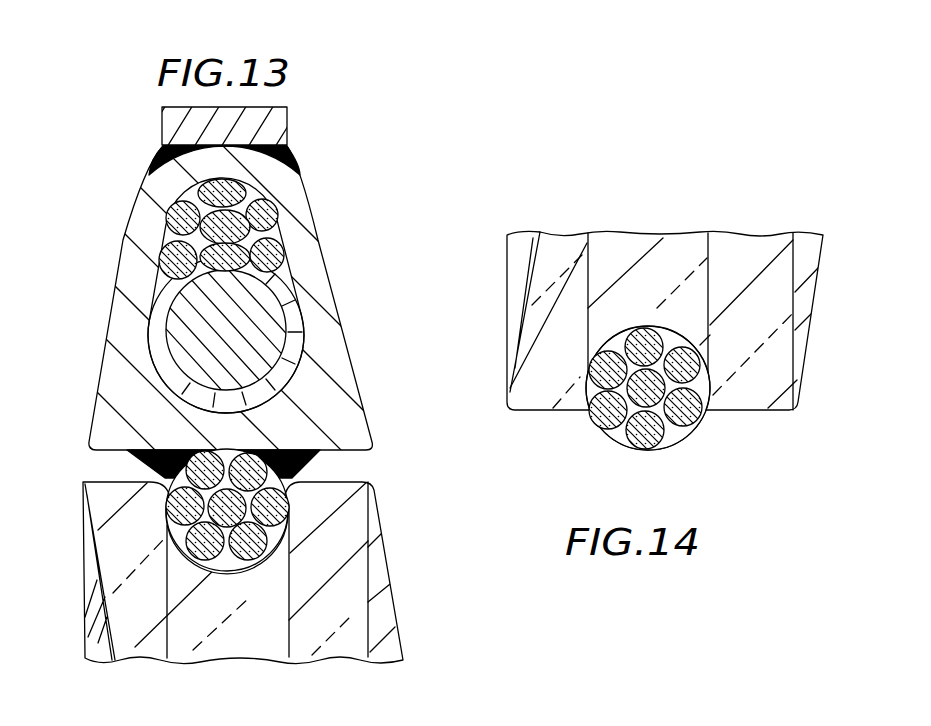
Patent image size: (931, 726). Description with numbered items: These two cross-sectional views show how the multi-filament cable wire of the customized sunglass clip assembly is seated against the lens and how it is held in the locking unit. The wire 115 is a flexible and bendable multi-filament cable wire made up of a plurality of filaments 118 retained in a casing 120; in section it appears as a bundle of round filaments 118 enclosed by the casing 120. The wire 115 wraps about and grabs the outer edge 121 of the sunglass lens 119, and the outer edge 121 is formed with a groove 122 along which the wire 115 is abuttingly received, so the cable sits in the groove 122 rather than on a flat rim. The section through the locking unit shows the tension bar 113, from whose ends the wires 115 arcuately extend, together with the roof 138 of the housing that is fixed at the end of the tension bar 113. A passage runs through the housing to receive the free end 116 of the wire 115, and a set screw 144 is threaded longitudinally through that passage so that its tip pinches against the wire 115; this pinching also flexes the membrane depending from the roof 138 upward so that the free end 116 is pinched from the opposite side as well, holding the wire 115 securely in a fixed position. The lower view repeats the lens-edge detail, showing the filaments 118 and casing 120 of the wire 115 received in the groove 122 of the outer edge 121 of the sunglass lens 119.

In FIG. 13, the tension bar 113 is at (183, 118).
In FIG. 13, the roof 138 is at (240, 168).
In FIG. 13, the free end 116 is at (167, 223).
In FIG. 13, the set screw 144 is at (200, 318).
In FIG. 13, the outer edge 121 is at (103, 479).
In FIG. 14, the outer edge 121 is at (548, 413).
In FIG. 13, the groove 122 is at (290, 514).
In FIG. 13, the sunglass lens 119 is at (350, 605).
In FIG. 14, the sunglass lens 119 is at (767, 345).
In FIG. 13, the wire 115 is at (228, 573).
In FIG. 14, the wire 115 is at (682, 441).
In FIG. 13, the filaments 118 is at (252, 572).
In FIG. 14, the filaments 118 is at (643, 325).
In FIG. 14, the casing 120 is at (603, 435).